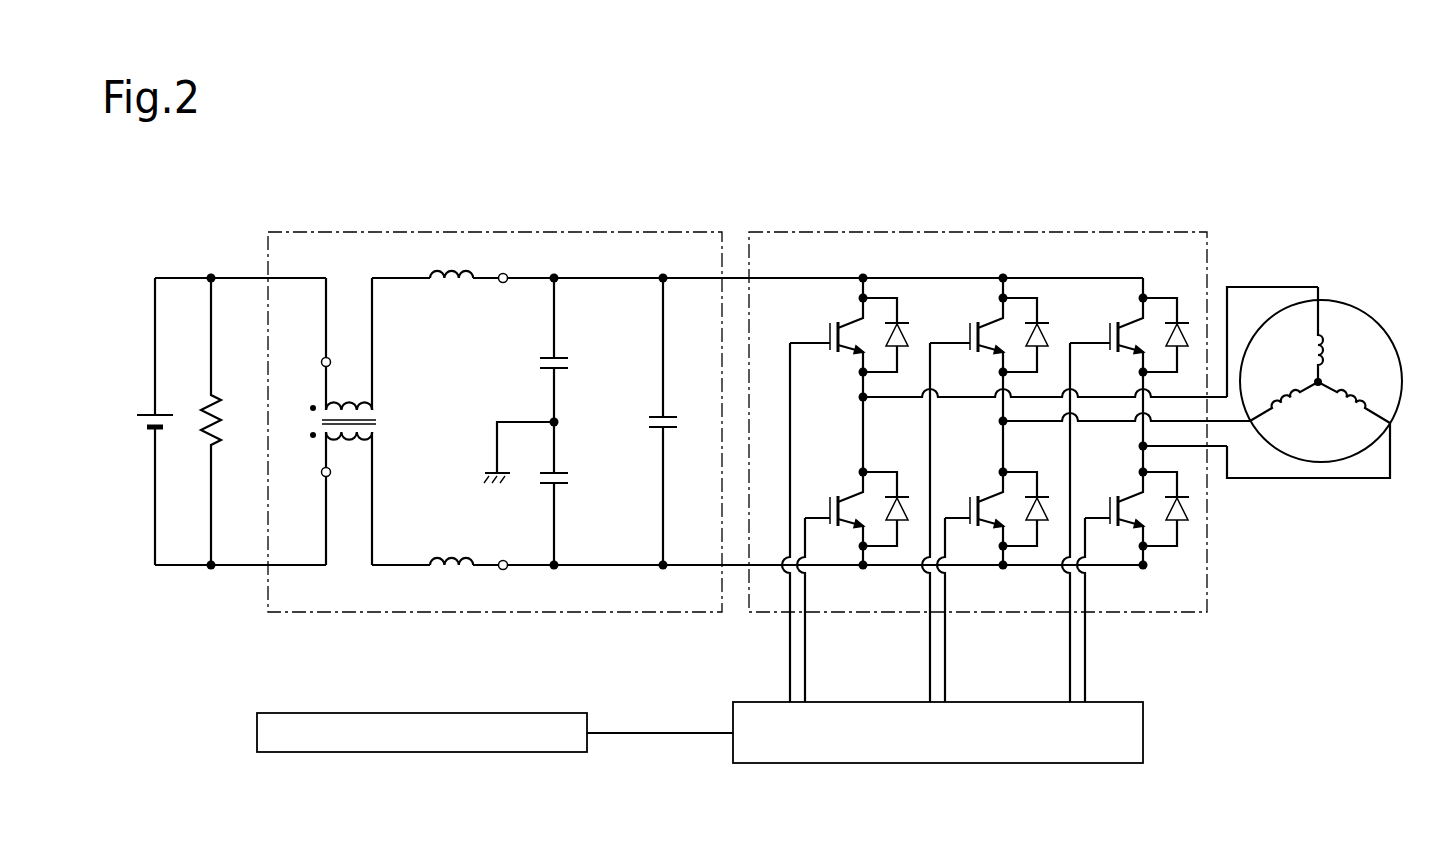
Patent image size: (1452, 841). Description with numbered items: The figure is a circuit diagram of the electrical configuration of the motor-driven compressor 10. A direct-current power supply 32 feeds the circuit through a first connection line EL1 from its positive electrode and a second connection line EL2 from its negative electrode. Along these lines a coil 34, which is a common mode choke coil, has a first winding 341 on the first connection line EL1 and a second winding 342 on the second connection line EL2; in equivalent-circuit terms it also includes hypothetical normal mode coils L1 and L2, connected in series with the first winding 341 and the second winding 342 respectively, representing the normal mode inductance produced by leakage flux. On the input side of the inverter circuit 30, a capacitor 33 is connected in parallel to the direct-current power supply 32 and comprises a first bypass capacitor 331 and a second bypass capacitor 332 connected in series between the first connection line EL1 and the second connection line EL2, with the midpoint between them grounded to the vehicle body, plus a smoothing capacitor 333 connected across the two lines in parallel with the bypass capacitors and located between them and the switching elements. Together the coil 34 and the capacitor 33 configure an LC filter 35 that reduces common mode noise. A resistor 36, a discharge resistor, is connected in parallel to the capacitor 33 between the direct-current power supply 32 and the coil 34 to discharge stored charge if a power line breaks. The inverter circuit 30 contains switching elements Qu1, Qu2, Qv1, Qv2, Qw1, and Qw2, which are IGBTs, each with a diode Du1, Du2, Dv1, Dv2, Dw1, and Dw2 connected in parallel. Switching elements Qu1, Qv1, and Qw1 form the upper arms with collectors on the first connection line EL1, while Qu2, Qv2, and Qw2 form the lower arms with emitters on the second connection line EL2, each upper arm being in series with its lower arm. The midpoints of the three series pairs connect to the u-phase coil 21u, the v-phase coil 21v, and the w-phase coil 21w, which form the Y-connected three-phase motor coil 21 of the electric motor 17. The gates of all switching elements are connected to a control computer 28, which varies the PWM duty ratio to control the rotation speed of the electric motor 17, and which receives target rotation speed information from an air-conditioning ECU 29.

The motor-driven compressor 10 is at (1262, 230).
The electric motor 17 is at (1337, 288).
The motor coil 21 is at (1348, 299).
The u-phase coil 21u is at (1330, 344).
The v-phase coil 21v is at (1290, 412).
The w-phase coil 21w is at (1352, 396).
The control computer 28 is at (1147, 733).
The air-conditioning ECU 29 is at (538, 712).
The inverter circuit 30 is at (1093, 230).
The direct-current power supply 32 is at (162, 405).
The capacitor 33 is at (542, 421).
The first bypass capacitor 331 is at (566, 358).
The second bypass capacitor 332 is at (565, 473).
The smoothing capacitor 333 is at (690, 403).
The coil 34 is at (380, 400).
The first winding 341 is at (372, 388).
The second winding 342 is at (372, 458).
The LC filter 35 is at (698, 230).
The resistor 36 is at (216, 396).
The first connection line EL1 is at (236, 274).
The second connection line EL2 is at (236, 568).
The hypothetical normal mode coil L1 is at (448, 290).
The hypothetical normal mode coil L2 is at (460, 554).
The switching element Qu1 is at (825, 330).
The switching element Qu2 is at (828, 504).
The switching element Qv1 is at (965, 330).
The switching element Qv2 is at (968, 504).
The switching element Qw1 is at (1105, 330).
The switching element Qw2 is at (1108, 504).
The diode Du1 is at (900, 316).
The diode Du2 is at (900, 494).
The diode Dv1 is at (1040, 316).
The diode Dv2 is at (1040, 494).
The diode Dw1 is at (1179, 319).
The diode Dw2 is at (1193, 512).